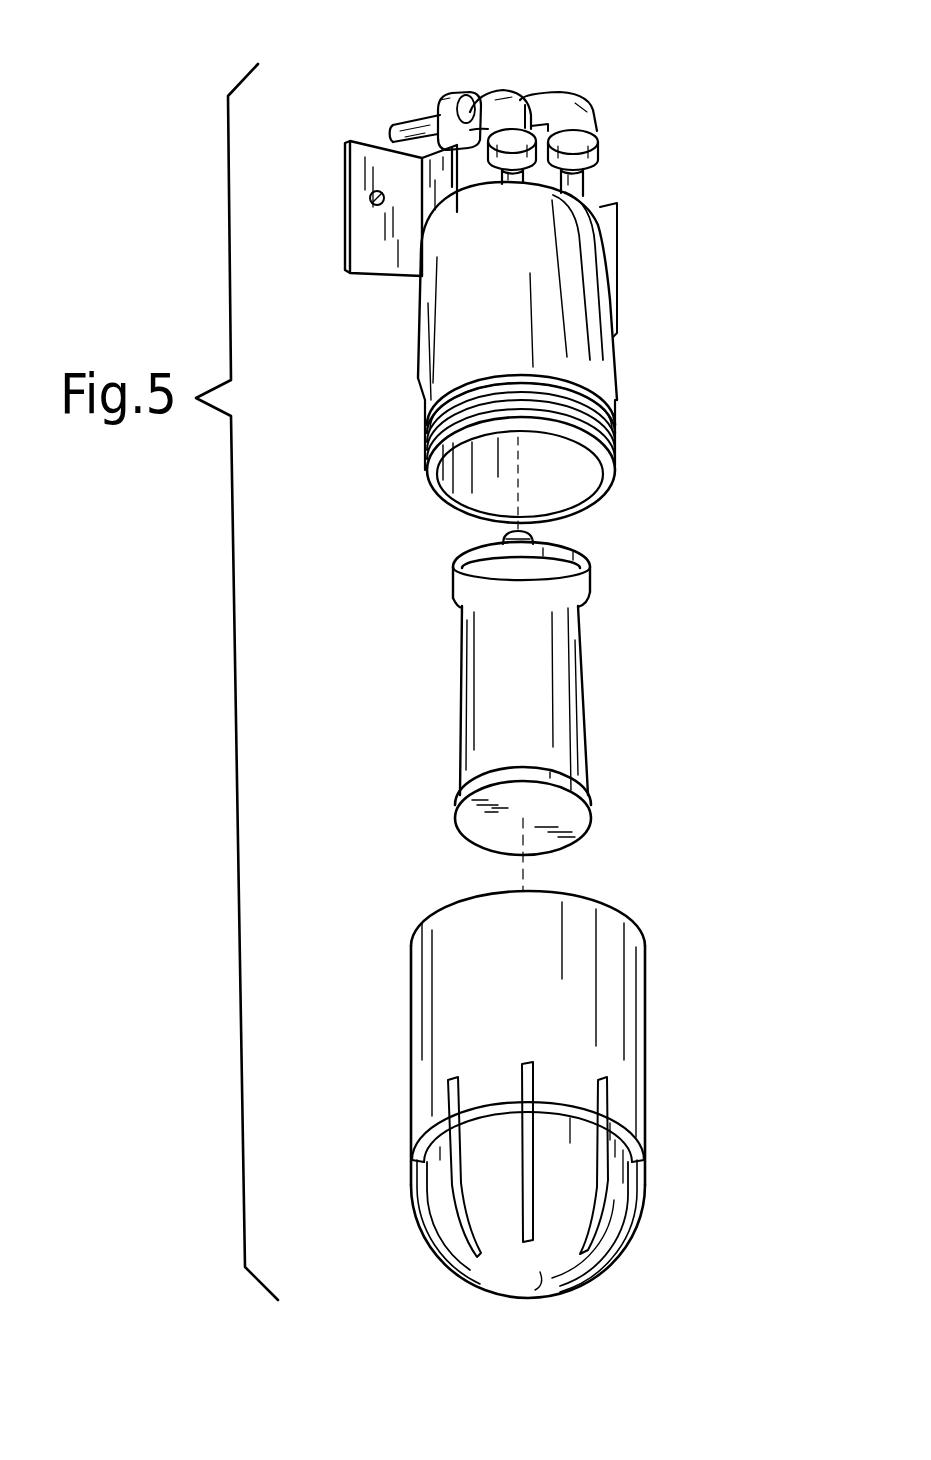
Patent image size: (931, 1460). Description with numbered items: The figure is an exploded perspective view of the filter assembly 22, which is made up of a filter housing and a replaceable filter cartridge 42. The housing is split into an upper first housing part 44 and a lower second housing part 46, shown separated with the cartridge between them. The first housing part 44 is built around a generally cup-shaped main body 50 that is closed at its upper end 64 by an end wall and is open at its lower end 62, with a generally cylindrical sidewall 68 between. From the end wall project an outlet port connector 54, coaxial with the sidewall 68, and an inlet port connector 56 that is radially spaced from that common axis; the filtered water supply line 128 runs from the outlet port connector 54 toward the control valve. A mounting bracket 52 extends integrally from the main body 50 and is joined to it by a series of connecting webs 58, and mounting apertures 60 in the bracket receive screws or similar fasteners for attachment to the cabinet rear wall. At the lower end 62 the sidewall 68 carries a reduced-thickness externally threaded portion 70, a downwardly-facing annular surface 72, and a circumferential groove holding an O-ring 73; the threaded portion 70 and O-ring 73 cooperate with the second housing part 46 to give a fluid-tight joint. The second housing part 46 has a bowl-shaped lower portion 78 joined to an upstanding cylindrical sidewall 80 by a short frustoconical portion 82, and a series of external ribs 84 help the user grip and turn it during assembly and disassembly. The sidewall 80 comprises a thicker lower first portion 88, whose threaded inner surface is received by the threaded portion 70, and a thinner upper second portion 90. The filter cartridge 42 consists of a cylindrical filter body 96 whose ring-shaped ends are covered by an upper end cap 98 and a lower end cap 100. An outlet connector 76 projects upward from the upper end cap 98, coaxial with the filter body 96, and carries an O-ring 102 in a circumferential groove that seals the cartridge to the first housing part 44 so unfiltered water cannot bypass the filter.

The filter assembly 22 is at (624, 110).
The first housing part 44 is at (650, 377).
The replaceable filter cartridge 42 is at (640, 689).
The second housing part 46 is at (676, 1050).
The filtered water supply line 128 is at (402, 122).
The mounting apertures 60 is at (370, 196).
The connecting webs 58 is at (430, 196).
The mounting bracket 52 is at (368, 262).
The inlet port connector 56 is at (592, 183).
The outlet port connector 54 is at (515, 171).
The upper end 64 is at (618, 208).
The main body 50 is at (607, 273).
The sidewall 68 is at (545, 325).
The downwardly-facing annular surface 72 is at (426, 427).
The O-ring 73 is at (604, 416).
The externally threaded portion 70 is at (438, 455).
The lower end 62 is at (608, 496).
The outlet connector 76 is at (534, 544).
The O-ring 102 is at (503, 539).
The upper end cap 98 is at (453, 581).
The filter body 96 is at (467, 717).
The lower end cap 100 is at (594, 812).
The second portion 90 is at (413, 957).
The sidewall 80 is at (418, 1043).
The first portion 88 is at (413, 1130).
The frustoconical portion 82 is at (628, 1138).
The external ribs 84 is at (414, 1217).
The bowl-shaped lower portion 78 is at (473, 1273).